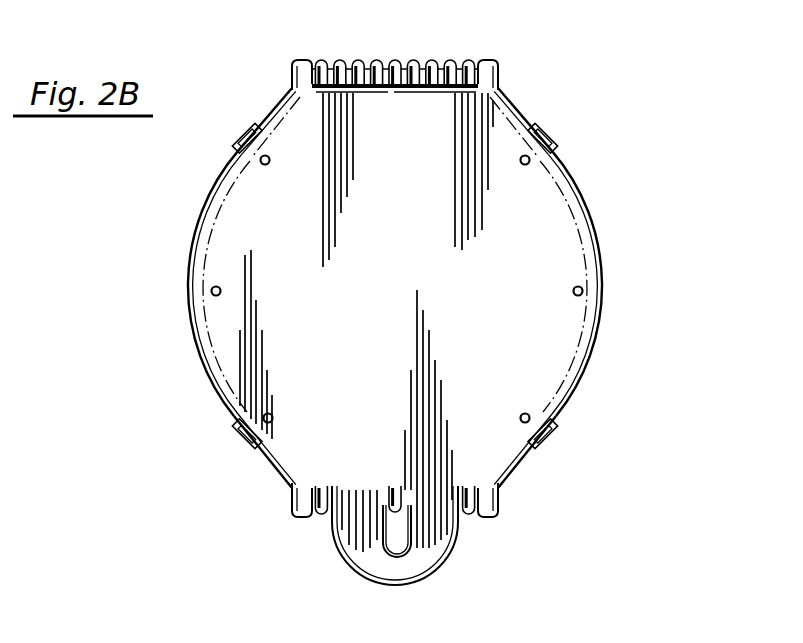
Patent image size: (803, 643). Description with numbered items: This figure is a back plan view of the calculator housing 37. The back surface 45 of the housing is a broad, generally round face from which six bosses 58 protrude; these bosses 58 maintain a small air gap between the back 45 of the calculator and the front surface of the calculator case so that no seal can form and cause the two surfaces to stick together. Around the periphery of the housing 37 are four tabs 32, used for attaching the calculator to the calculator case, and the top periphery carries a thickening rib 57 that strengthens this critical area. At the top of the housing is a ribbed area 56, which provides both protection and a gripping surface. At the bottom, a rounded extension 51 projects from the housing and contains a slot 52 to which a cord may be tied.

The tabs 32 is at (240, 134).
The calculator housing 37 is at (572, 178).
The back surface 45 is at (415, 257).
The rounded extension 51 is at (430, 537).
The slot 52 is at (393, 531).
The ribbed area 56 is at (385, 60).
The thickening rib 57 is at (597, 228).
The bosses 58 is at (582, 294).